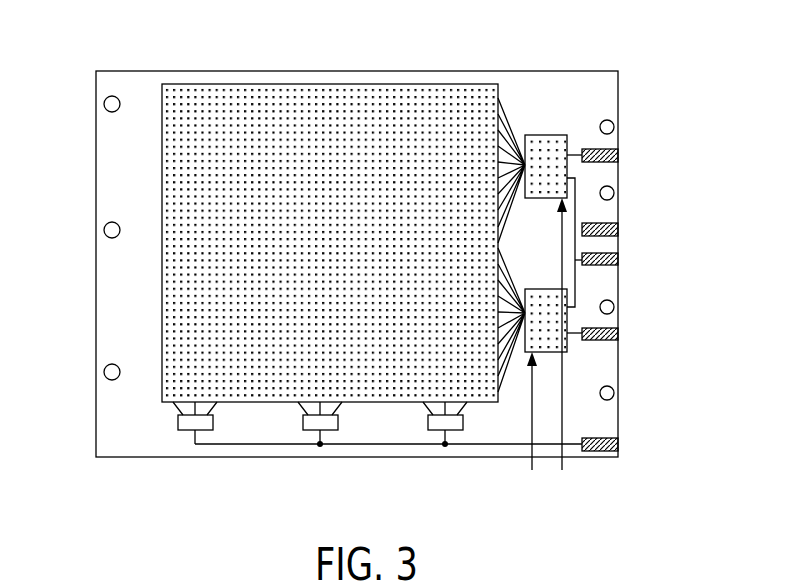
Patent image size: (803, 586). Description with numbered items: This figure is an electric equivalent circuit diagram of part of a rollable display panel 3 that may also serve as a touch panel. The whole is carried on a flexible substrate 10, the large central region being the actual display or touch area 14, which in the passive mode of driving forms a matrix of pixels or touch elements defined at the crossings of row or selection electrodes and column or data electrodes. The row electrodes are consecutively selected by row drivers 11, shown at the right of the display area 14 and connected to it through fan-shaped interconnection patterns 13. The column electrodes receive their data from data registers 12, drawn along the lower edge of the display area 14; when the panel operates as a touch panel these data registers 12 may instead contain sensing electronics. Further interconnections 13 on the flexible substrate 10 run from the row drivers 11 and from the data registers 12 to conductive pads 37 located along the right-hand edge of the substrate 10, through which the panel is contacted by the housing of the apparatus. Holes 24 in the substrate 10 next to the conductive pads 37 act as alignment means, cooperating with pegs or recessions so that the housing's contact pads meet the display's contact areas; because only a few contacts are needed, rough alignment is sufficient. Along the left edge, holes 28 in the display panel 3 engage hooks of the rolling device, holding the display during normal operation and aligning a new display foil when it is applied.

The display panel 3 is at (134, 474).
The flexible substrate 10 is at (603, 93).
The row drivers 11 is at (580, 471).
The data registers 12 is at (211, 440).
The interconnections 13 is at (517, 217).
The display area 14 is at (342, 103).
The holes 24 is at (614, 127).
The holes 28 is at (104, 103).
The conductive pads 37 is at (624, 155).